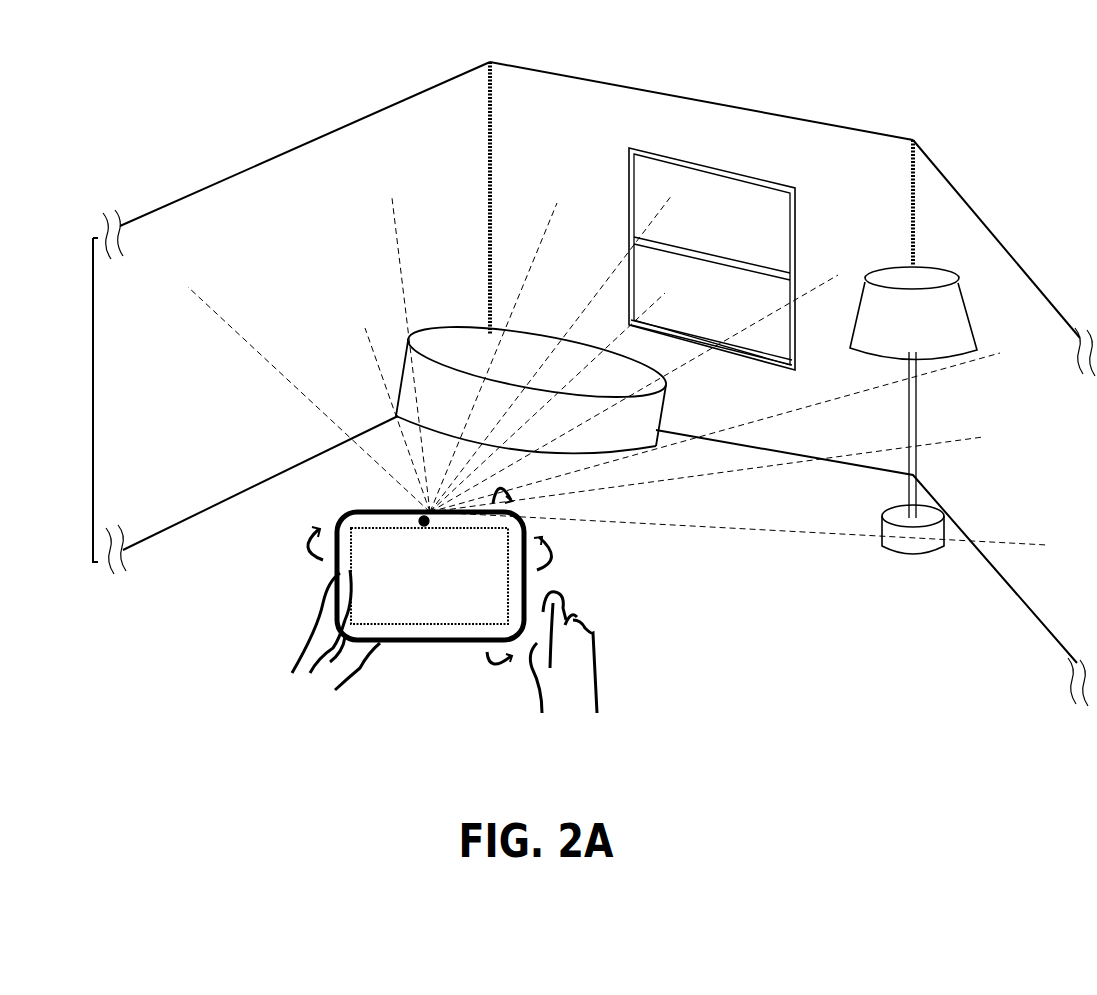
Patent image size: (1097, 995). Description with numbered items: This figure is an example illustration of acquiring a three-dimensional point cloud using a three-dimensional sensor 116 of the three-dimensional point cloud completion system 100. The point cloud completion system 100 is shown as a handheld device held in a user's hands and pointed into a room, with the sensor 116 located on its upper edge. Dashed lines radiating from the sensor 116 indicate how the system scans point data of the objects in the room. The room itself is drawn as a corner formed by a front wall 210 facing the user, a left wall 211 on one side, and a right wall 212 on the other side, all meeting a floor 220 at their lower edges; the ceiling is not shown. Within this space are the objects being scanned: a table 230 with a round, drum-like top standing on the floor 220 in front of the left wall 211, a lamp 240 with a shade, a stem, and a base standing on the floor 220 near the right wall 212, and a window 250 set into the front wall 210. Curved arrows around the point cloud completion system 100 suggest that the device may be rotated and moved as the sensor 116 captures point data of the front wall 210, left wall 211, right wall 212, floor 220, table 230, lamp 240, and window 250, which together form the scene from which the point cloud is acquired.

The 3D point cloud completion system 100 is at (340, 557).
The 3D sensor 116 is at (410, 521).
The front wall 210 is at (682, 125).
The left wall 211 is at (265, 198).
The right wall 212 is at (958, 237).
The floor 220 is at (820, 570).
The table 230 is at (447, 335).
The lamp 240 is at (920, 426).
The window 250 is at (748, 179).